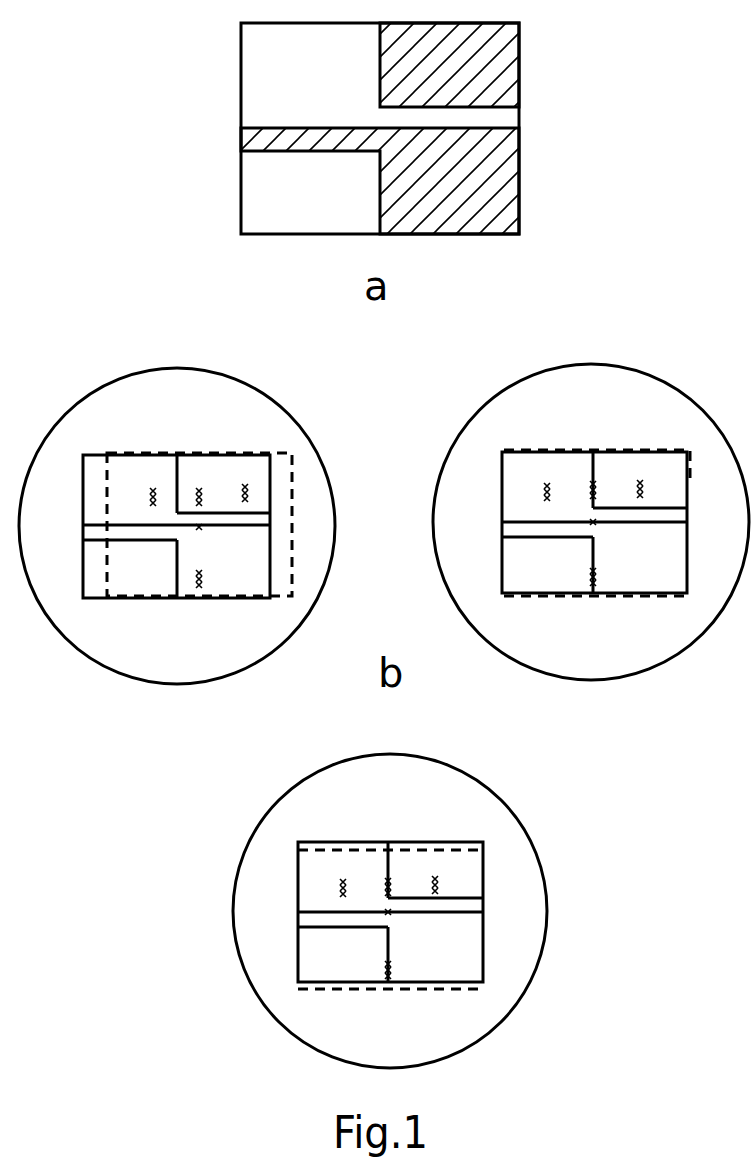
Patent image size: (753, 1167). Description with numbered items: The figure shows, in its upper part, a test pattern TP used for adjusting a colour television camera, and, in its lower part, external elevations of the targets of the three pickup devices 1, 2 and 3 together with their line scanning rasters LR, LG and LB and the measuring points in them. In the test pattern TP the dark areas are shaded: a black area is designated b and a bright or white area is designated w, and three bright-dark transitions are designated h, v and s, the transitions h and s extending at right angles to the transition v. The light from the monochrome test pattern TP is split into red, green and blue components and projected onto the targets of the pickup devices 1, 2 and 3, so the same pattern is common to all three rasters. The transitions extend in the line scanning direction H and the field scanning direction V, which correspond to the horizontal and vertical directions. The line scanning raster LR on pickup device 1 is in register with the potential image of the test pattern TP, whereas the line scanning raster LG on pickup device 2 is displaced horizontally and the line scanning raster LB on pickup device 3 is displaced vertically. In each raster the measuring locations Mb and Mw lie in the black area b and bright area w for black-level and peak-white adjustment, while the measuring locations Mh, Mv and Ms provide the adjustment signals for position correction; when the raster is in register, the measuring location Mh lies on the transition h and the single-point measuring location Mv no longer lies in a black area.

The bright area w is at (287, 70).
The bright-dark transition h is at (380, 92).
The black area b is at (495, 87).
The bright-dark transition v is at (380, 125).
The bright-dark transition s is at (380, 203).
The test pattern TP is at (556, 69).
The measuring location for white Mw is at (150, 495).
The measuring location for horizontal adjustment Mh is at (196, 495).
The measuring location for black Mb is at (243, 493).
The measuring location for vertical adjustment Mv is at (200, 528).
The measuring location for adjustment signal Cs Ms is at (203, 579).
The line scanning raster for green LG is at (310, 538).
The line scanning raster for red LR is at (689, 452).
The line scanning raster for blue LB is at (389, 990).
The line scanning direction H is at (140, 355).
The field scanning direction V is at (17, 483).
The pickup device 1 is at (479, 674).
The pickup device 2 is at (300, 680).
The pickup device 3 is at (391, 747).